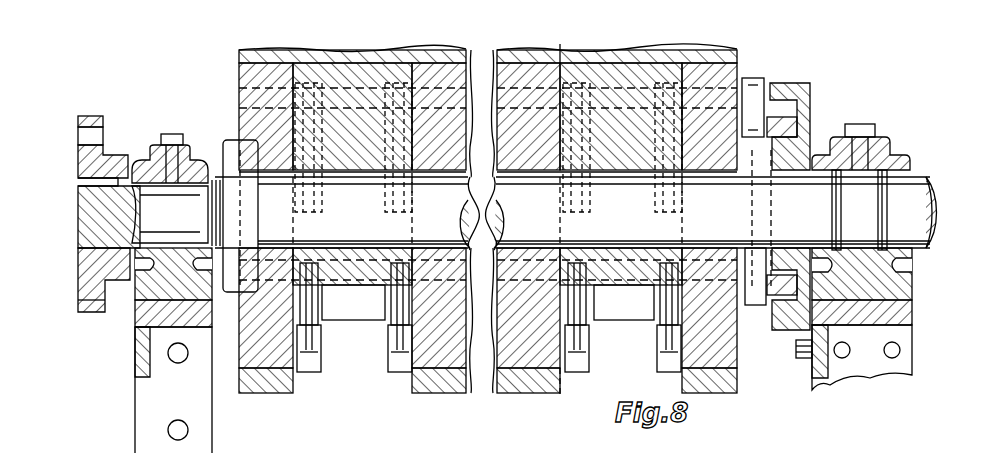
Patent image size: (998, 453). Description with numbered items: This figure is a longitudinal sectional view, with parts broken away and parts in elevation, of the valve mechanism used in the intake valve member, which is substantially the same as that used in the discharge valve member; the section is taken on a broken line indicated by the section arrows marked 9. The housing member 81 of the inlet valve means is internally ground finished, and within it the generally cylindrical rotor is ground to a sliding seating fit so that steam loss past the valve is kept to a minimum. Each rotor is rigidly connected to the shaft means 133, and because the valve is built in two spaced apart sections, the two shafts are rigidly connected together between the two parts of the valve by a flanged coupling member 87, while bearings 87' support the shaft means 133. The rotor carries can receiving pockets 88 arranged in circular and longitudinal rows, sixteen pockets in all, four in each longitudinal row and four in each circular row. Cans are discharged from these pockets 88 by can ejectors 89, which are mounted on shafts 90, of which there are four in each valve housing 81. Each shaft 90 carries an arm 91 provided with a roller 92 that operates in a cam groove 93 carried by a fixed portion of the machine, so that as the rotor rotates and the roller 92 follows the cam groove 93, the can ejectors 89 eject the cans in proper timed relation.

The housing member 81 is at (239, 53).
The flanged coupling member 87 is at (114, 199).
The bearing 87' is at (533, 269).
The can receiving pocket 88 is at (352, 318).
The can ejector 89 is at (385, 208).
The shaft 90 is at (482, 100).
The arm 91 is at (752, 248).
The roller 92 is at (780, 275).
The cam groove 93 is at (796, 104).
The shaft means 133 is at (920, 196).
The section line 9- 9 is at (572, 48).